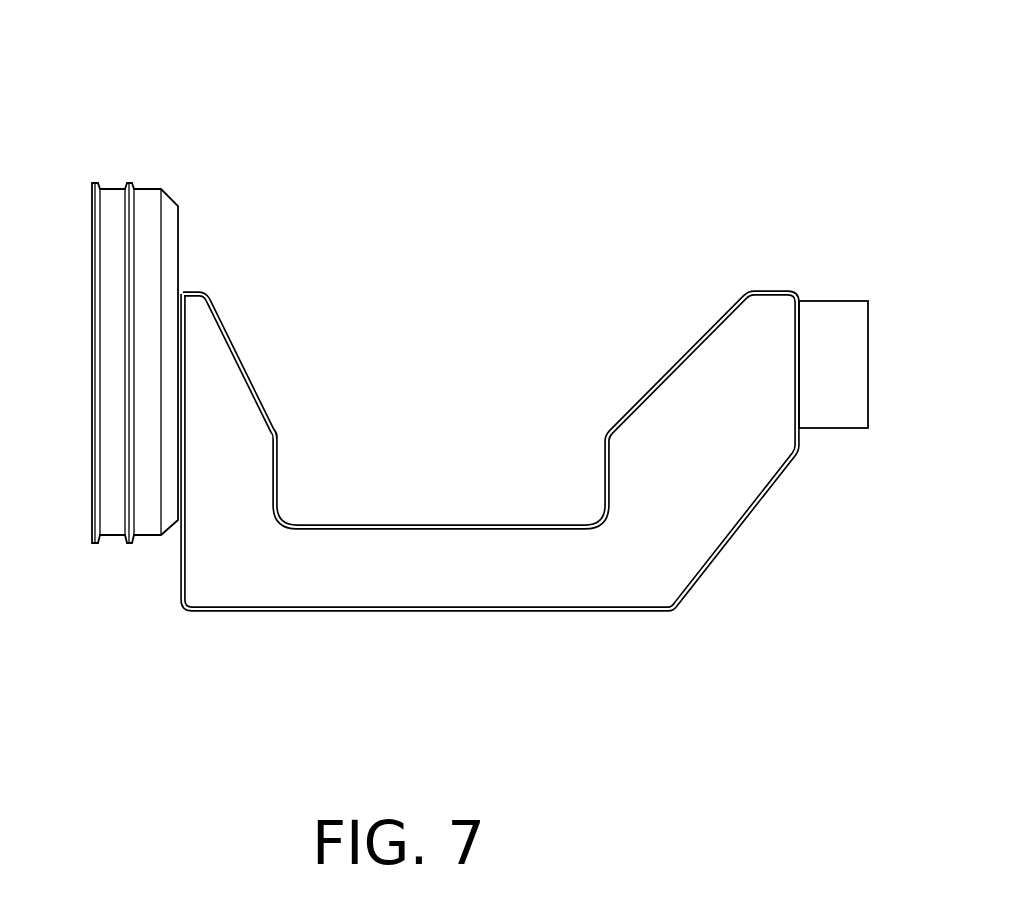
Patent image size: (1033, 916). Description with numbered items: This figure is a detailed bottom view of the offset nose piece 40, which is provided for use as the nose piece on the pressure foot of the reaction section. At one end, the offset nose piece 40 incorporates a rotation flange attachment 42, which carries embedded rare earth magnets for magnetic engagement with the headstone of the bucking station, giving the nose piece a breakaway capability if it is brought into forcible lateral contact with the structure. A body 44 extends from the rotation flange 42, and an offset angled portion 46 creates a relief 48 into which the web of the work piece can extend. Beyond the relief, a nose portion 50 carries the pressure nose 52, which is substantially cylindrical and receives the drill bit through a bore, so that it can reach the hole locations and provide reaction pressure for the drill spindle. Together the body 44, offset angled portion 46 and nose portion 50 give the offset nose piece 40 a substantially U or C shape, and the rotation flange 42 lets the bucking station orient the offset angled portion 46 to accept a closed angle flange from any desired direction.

The offset nose piece 40 is at (672, 690).
The rotation flange attachment 42 is at (158, 192).
The body 44 is at (215, 412).
The offset angled portion 46 is at (445, 578).
The relief 48 is at (427, 387).
The nose portion 50 is at (715, 443).
The pressure nose 52 is at (835, 332).